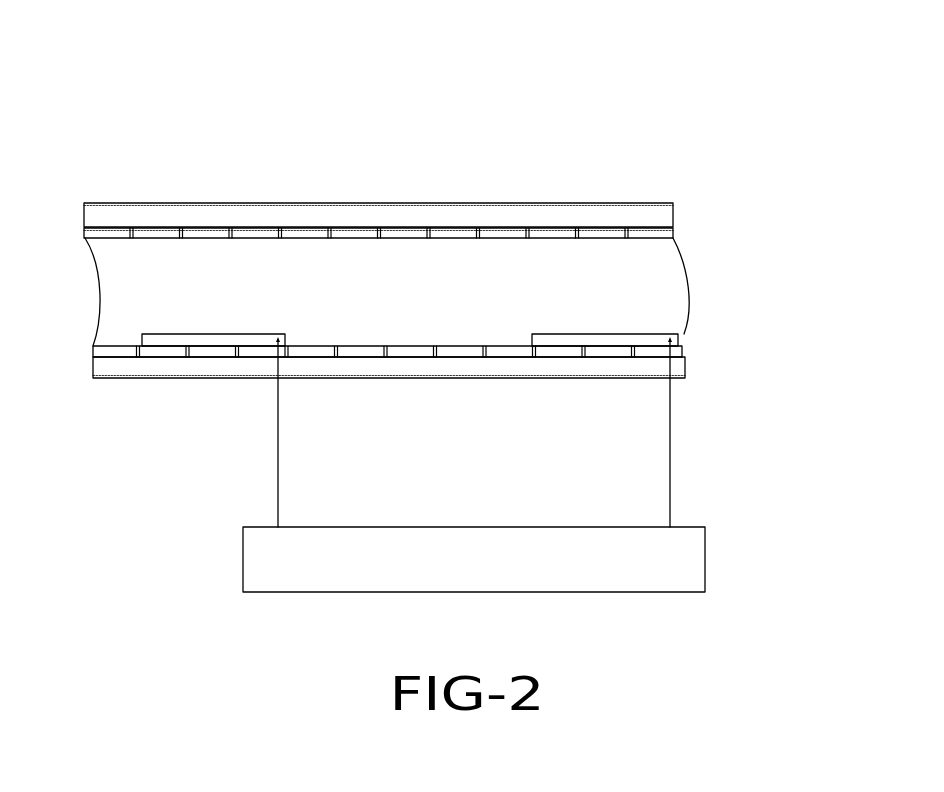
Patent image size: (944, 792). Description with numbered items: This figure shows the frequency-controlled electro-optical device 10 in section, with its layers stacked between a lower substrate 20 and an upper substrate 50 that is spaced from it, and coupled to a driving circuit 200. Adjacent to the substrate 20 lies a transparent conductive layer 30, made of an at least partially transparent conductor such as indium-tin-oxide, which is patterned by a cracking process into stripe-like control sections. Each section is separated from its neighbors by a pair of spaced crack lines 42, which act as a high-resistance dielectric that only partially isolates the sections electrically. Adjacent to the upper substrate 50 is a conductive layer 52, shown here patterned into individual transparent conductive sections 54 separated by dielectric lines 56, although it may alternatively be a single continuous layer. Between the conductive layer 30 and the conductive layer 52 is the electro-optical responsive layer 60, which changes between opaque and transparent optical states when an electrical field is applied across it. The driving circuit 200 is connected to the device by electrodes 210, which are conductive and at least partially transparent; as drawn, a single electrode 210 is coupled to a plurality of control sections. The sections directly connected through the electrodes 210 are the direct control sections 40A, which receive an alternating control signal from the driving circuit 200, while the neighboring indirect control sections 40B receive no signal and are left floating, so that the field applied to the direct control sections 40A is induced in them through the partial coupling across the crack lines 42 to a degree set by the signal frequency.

The frequency-controlled electro-optical device 10 is at (356, 103).
The substrate 50 is at (140, 218).
The conductive layer 52 is at (662, 235).
The individual sections 54 is at (307, 232).
The dielectric lines 56 is at (132, 238).
The electro-optical responsive layer 60 is at (655, 282).
The electrodes 210 is at (167, 338).
The crack lines 42 is at (193, 345).
The transparent conductive layer 30 is at (682, 349).
The substrate 20 is at (678, 370).
The direct control sections 40A is at (265, 352).
The indirect control sections 40B is at (113, 352).
The driving circuit 200 is at (682, 563).